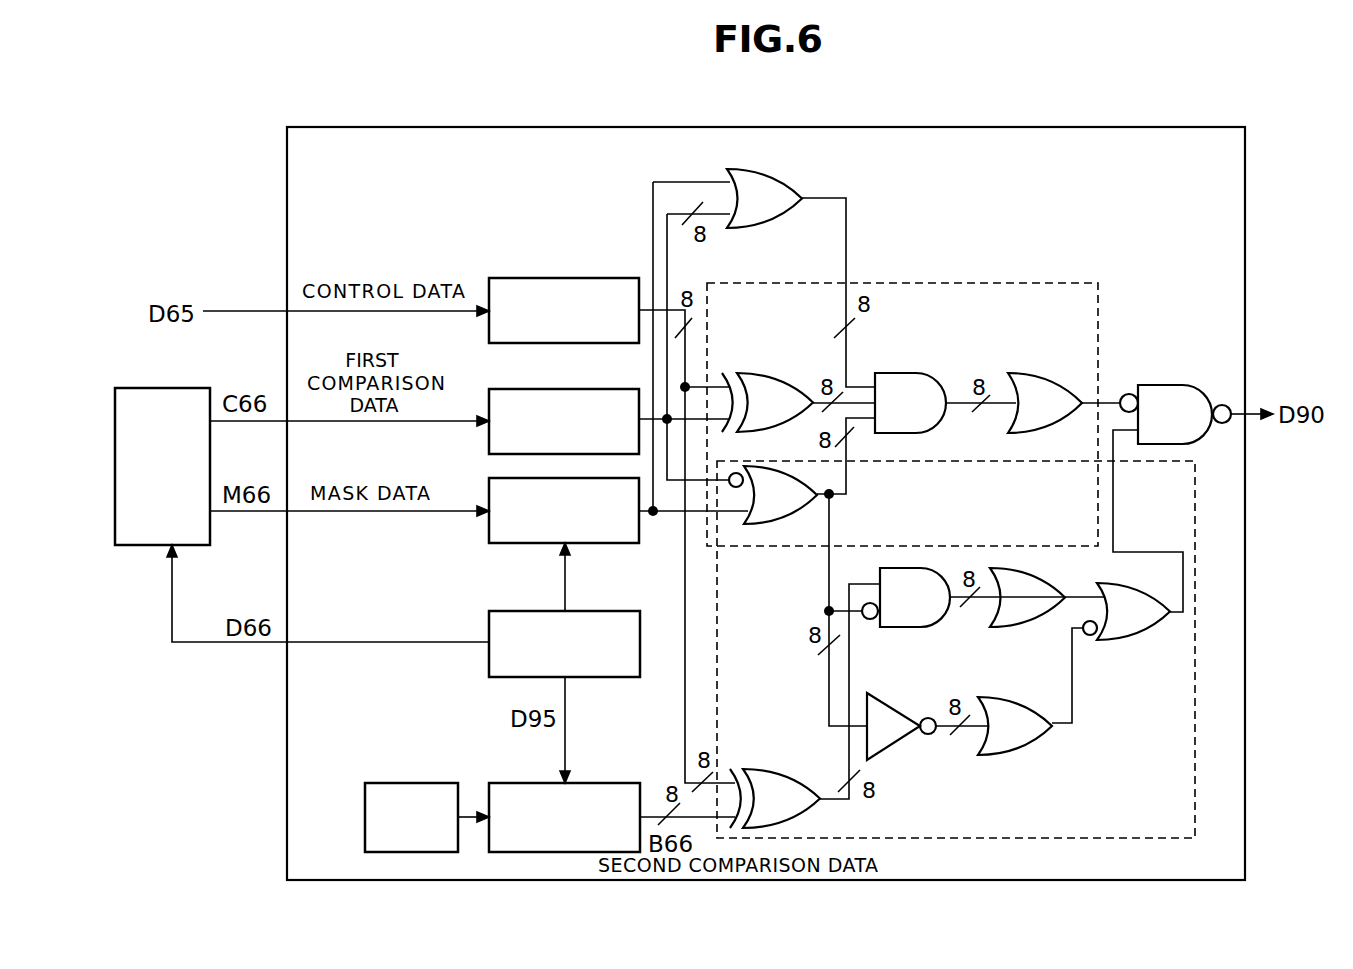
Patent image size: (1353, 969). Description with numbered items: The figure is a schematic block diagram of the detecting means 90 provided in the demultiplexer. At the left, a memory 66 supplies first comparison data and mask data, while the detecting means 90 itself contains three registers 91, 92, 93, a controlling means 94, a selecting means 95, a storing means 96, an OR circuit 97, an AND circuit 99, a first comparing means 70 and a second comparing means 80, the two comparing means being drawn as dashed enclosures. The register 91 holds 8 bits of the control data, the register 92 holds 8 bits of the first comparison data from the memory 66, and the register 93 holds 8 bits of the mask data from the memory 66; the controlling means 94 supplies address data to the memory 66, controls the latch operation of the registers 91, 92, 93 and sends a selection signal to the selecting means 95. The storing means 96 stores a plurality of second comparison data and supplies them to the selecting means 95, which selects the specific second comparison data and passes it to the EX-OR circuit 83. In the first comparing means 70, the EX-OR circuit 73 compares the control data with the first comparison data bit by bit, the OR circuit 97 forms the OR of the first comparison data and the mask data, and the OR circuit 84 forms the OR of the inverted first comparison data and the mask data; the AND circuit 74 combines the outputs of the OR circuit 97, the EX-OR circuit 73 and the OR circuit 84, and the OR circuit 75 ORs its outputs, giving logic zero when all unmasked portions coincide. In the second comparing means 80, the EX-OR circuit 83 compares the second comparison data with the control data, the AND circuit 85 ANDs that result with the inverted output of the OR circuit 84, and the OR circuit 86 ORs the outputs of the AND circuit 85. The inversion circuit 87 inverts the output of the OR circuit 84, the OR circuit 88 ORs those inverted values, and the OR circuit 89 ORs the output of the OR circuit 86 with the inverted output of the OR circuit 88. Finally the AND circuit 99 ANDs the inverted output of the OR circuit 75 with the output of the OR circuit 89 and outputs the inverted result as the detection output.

The memory 66 is at (168, 388).
The detecting means 90 is at (738, 123).
The register 91 is at (565, 277).
The register 92 is at (565, 388).
The register 93 is at (537, 546).
The controlling means 94 is at (594, 610).
The selecting means 95 is at (587, 782).
The storing means 96 is at (433, 782).
The OR circuit 97 is at (796, 183).
The first comparing means 70 is at (872, 282).
The EX-OR circuit 73 is at (758, 374).
The AND circuit 74 is at (897, 372).
The OR circuit 75 is at (1025, 372).
The AND circuit 99 is at (1157, 384).
The second comparing means 80 is at (888, 840).
The OR circuit 84 is at (767, 526).
The AND circuit 85 is at (898, 628).
The OR circuit 86 is at (1010, 628).
The inversion circuit 87 is at (888, 745).
The OR circuit 88 is at (1005, 757).
The OR circuit 89 is at (1115, 642).
The EX-OR circuit 83 is at (782, 768).
The bits 8 is at (675, 192).